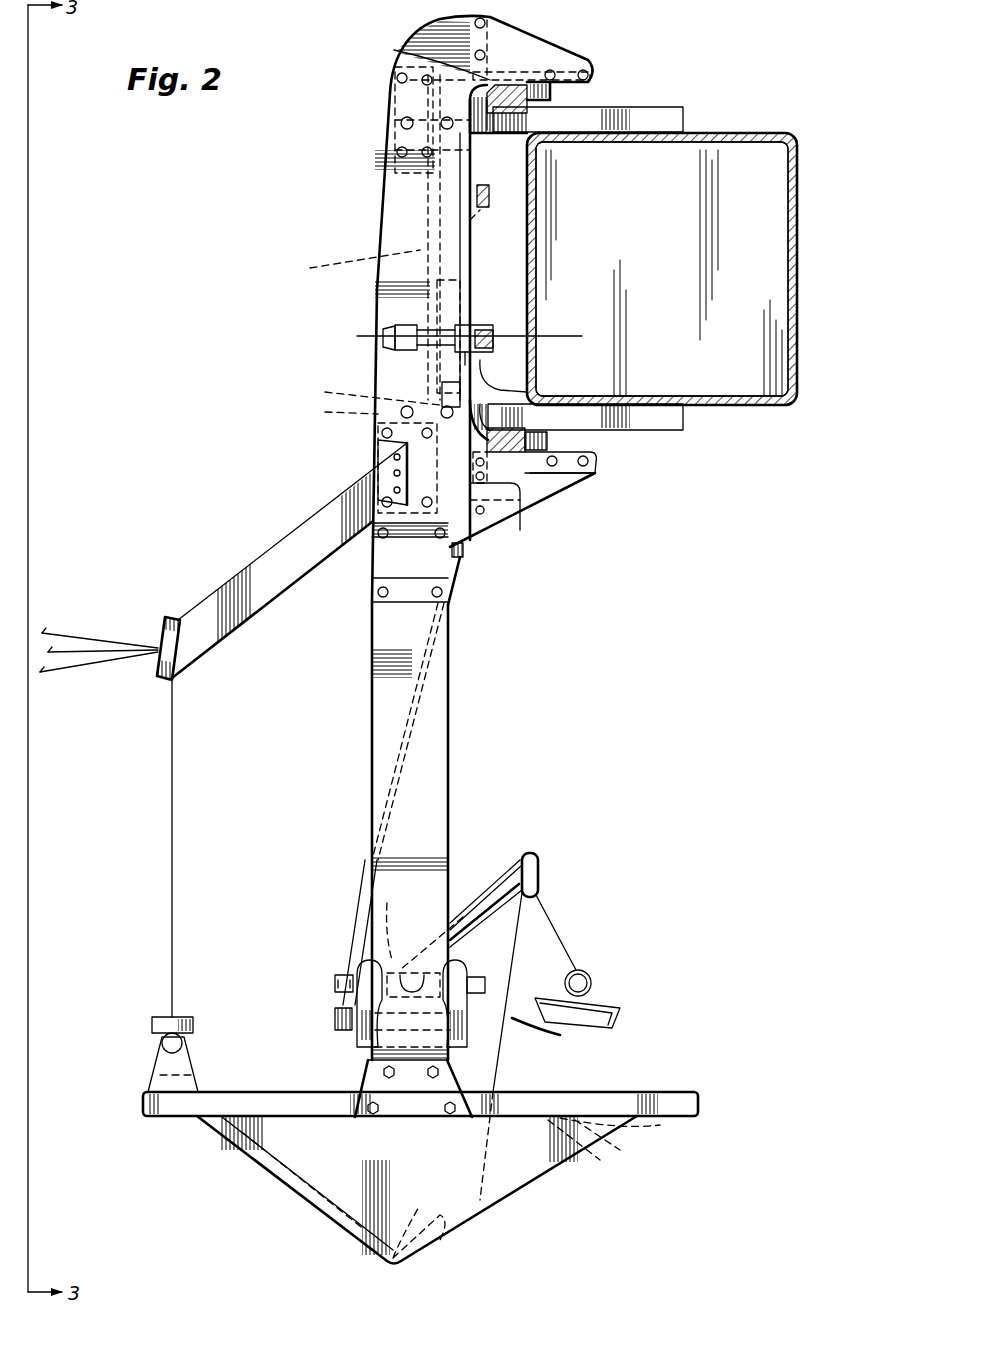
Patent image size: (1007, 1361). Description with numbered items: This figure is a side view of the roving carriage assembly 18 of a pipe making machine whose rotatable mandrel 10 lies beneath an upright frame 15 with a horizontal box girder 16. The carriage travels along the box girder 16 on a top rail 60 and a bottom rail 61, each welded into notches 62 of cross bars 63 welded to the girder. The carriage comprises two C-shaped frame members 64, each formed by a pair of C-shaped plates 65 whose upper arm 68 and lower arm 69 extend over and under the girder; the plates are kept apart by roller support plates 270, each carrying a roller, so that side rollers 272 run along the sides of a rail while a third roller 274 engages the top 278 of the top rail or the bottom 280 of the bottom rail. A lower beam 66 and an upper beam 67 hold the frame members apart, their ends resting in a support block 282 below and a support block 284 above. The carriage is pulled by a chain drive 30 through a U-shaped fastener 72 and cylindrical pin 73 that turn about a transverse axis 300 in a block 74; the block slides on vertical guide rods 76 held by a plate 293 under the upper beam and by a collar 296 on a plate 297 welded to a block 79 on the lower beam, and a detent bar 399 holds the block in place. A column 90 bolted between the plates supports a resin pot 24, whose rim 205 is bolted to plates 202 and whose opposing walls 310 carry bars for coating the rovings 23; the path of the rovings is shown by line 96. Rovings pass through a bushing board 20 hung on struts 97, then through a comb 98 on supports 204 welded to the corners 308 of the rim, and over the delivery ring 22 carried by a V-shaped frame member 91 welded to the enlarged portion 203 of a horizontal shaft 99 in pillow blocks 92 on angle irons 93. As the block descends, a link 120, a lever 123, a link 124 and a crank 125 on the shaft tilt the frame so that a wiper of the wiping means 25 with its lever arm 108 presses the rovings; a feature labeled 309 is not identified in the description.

The mandrel 10 is at (590, 980).
The upright frame 15 is at (674, 248).
The box girder 16 is at (715, 136).
The roving carriage assembly 18 is at (469, 302).
The bushing board 20 is at (165, 620).
The delivery ring 22 is at (542, 862).
The rovings 23 is at (62, 675).
The resin pot 24 is at (512, 1185).
The wiping means 25 is at (620, 1026).
The chain drive 30 is at (490, 200).
The top rail 60 is at (535, 82).
The bottom rail 61 is at (522, 392).
The notches 62 is at (540, 135).
The cross bars 63 is at (610, 112).
The C-shaped frame members 64 is at (380, 198).
The C-shaped plates 65 is at (390, 235).
The lower beam 66 is at (378, 458).
The upper beam 67 is at (395, 100).
The upper arm 68 is at (452, 14).
The lower arm 69 is at (505, 505).
The U-shaped fastener 72 is at (495, 330).
The cylindrical pin 73 is at (495, 350).
The block 74 is at (470, 312).
The guide rods 76 is at (375, 290).
The block 79 is at (328, 411).
The column 90 is at (445, 778).
The V-shaped frame member 91 is at (492, 890).
The pillow blocks 92 is at (345, 965).
The angle irons 93 is at (375, 1040).
The roving path line 96 is at (185, 808).
The struts 97 is at (243, 612).
The comb 98 is at (165, 1017).
The horizontal shaft 99 is at (335, 985).
The lever arm 108 is at (575, 1035).
The link 120 is at (432, 572).
The lever 123 is at (465, 557).
The link 124 is at (420, 715).
The crank 125 is at (342, 1028).
The plates 202 is at (385, 1085).
The enlarged portion 203 is at (409, 925).
The supports 204 is at (160, 1068).
The rim 205 is at (625, 1115).
The roller support plates 270 is at (520, 28).
The side rollers 272 is at (575, 100).
The third roller 274 is at (575, 30).
The top of top rail 278 is at (470, 75).
The bottom of bottom rail 280 is at (565, 482).
The support block 282 is at (410, 543).
The support block 284 is at (398, 78).
The flat horizontal plate 293 is at (485, 220).
The collar 296 is at (436, 339).
The flat horizontal plate 297 is at (354, 391).
The horizontal transverse axis 300 is at (395, 322).
The corners 308 is at (152, 1115).
The cable path 309 is at (443, 1175).
The opposing walls 310 is at (350, 1225).
The detent bar 399 is at (339, 262).